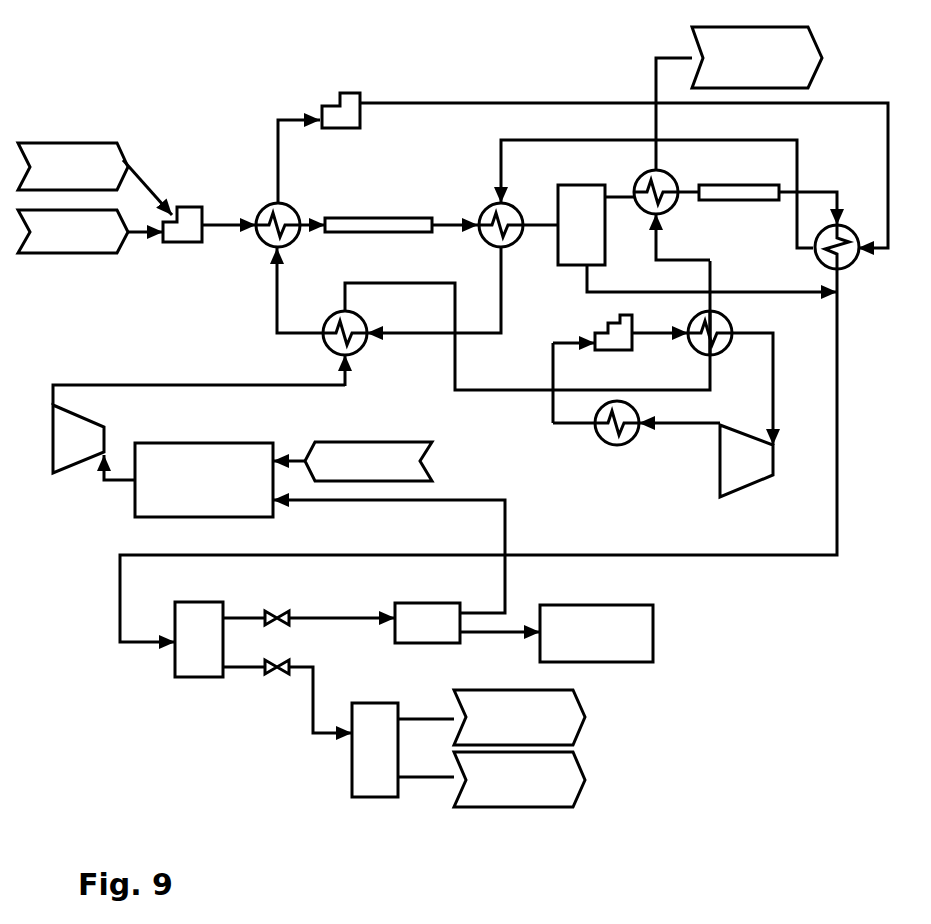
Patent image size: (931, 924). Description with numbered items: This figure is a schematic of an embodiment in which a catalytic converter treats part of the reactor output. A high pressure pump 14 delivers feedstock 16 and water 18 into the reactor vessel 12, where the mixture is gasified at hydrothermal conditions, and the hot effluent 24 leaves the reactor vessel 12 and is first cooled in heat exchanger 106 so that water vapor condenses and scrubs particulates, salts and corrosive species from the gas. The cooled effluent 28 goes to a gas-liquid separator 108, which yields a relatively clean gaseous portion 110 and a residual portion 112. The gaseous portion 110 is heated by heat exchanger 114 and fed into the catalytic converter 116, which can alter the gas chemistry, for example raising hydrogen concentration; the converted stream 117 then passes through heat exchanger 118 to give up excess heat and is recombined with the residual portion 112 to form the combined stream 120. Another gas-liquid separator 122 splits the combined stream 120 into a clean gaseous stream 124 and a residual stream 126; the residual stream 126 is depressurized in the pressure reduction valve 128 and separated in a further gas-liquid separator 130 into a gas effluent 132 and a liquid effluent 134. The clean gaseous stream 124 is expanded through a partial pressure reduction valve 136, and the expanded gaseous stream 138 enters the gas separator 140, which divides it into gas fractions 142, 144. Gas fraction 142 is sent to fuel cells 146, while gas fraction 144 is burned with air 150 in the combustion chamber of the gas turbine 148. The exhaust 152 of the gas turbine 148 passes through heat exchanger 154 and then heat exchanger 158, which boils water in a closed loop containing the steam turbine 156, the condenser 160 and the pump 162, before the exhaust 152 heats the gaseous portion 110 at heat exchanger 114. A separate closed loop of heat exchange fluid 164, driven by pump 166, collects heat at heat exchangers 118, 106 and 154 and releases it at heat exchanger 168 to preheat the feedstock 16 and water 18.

The reactor vessel 12 is at (376, 217).
The high pressure pump 14 is at (177, 213).
The feedstock 16 is at (59, 180).
The water 18 is at (59, 245).
The effluent 24 is at (448, 238).
The cooled effluent 28 is at (546, 238).
The heat exchanger 106 is at (481, 204).
The gas-liquid separator 108 is at (582, 184).
The gaseous portion 110 is at (629, 194).
The residual portion 112 is at (618, 288).
The heat exchanger 114 is at (643, 211).
The catalytic converter 116 is at (741, 203).
The converted stream 117 is at (812, 191).
The heat exchanger 118 is at (849, 268).
The combined stream 120 is at (760, 558).
The gas-liquid separator 122 is at (172, 666).
The clean gaseous stream 124 is at (243, 612).
The residual stream 126 is at (240, 672).
The pressure reduction valve 128 is at (292, 665).
The gas-liquid separator 130 is at (348, 791).
The gas effluent 132 is at (589, 723).
The liquid effluent 134 is at (589, 787).
The partial pressure reduction valve 136 is at (285, 610).
The expanded gaseous stream 138 is at (353, 612).
The gas separator 140 is at (412, 637).
The gas fraction 142 is at (488, 645).
The gas fraction 144 is at (510, 580).
The fuel cells 146 is at (654, 640).
The gas turbine 148 is at (75, 408).
The air 150 is at (356, 442).
The exhaust 152 is at (681, 56).
The heat exchanger 154 is at (364, 350).
The steam turbine 156 is at (729, 469).
The heat exchanger 158 is at (738, 323).
The condenser 160 is at (627, 445).
The pump 162 is at (604, 322).
The heat exchange fluid 164 is at (276, 152).
The pump 166 is at (322, 108).
The heat exchanger 168 is at (263, 244).